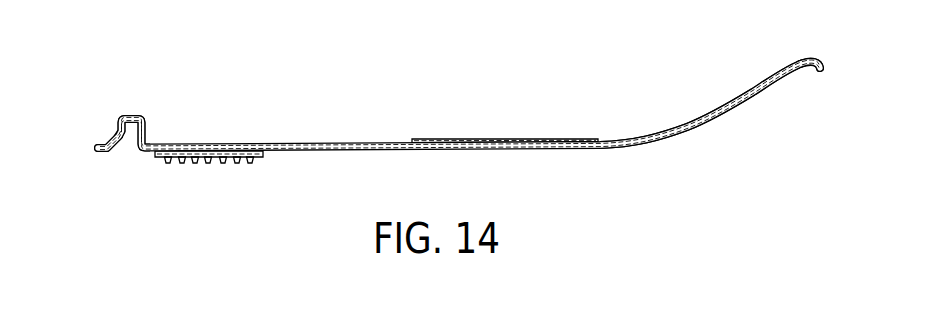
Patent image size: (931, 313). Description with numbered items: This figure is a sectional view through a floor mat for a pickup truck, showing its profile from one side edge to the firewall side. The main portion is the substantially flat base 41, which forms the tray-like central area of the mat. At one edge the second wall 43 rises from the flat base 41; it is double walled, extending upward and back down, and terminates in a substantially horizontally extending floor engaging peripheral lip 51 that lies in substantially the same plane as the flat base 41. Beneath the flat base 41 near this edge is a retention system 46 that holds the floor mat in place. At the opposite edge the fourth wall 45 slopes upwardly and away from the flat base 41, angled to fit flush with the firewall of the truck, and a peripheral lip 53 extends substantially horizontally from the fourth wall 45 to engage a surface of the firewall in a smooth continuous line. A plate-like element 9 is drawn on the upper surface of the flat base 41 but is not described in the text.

The plate 9 is at (508, 139).
The flat base 41 is at (368, 142).
The second wall 43 is at (131, 113).
The fourth wall 45 is at (748, 96).
The retention system 46 is at (209, 178).
The peripheral lip 51 is at (102, 156).
The peripheral lip 53 is at (822, 71).